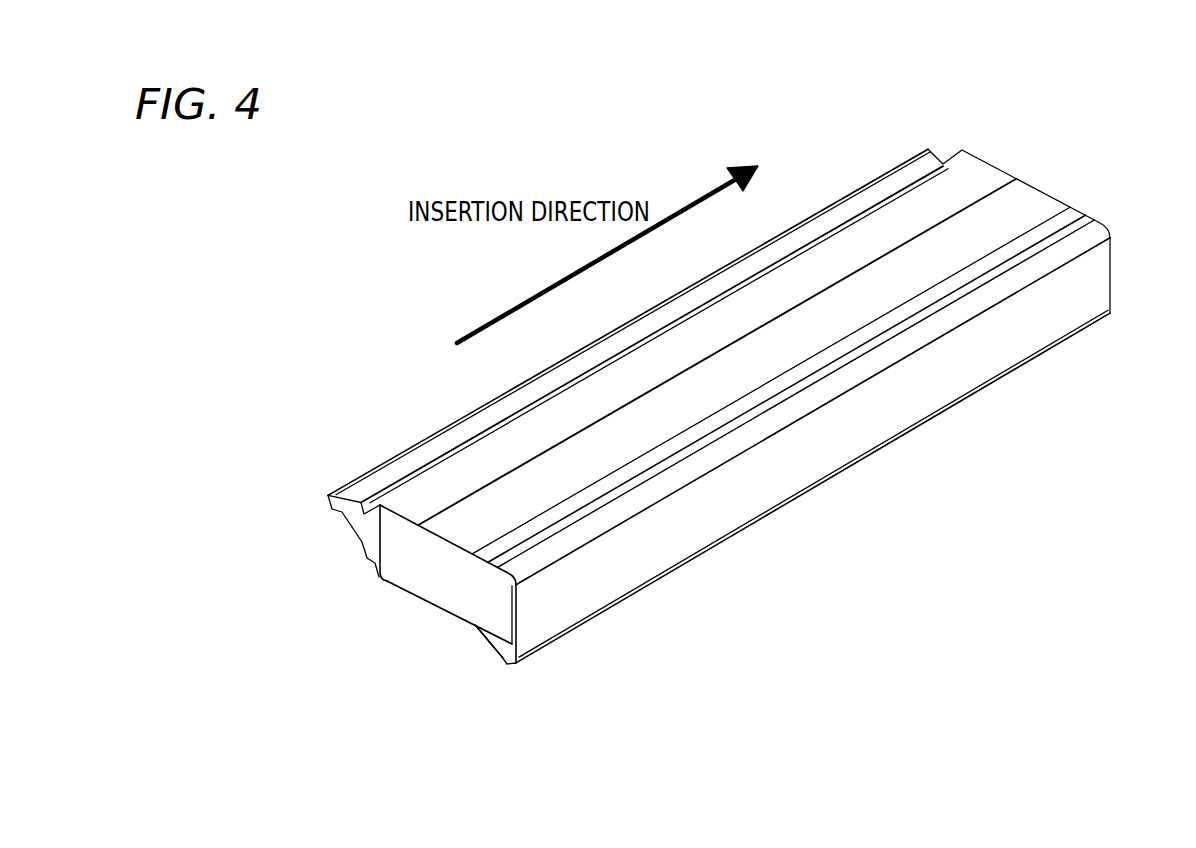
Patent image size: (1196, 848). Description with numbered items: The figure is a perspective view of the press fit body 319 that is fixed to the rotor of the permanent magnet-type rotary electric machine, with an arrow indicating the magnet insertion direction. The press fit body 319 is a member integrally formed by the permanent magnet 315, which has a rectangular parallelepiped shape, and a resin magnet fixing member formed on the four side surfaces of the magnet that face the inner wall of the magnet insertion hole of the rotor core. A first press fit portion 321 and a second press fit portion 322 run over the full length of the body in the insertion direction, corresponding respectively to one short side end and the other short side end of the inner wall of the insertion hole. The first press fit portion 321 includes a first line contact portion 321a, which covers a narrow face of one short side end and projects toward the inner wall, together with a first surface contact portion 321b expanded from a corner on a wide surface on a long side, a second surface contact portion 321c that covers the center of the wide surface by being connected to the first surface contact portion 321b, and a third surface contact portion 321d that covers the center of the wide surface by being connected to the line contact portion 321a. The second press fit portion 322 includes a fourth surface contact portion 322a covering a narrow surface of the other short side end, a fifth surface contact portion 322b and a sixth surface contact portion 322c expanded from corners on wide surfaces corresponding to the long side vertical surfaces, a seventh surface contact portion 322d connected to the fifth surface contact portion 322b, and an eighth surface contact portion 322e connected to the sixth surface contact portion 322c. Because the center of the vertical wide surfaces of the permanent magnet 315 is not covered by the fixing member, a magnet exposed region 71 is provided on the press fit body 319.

The press fit body 319 is at (1108, 174).
The first press fit portion 321 is at (417, 452).
The first line contact portion 321a is at (333, 505).
The first surface contact portion 321b is at (379, 579).
The second surface contact portion 321c is at (418, 592).
The third surface contact portion 321d is at (463, 477).
The permanent magnet 315 is at (440, 582).
The second press fit portion 322 is at (770, 480).
The fourth surface contact portion 322a is at (745, 503).
The fifth surface contact portion 322b is at (503, 660).
The sixth surface contact portion 322c is at (647, 495).
The seventh surface contact portion 322d is at (476, 627).
The eighth surface contact portion 322e is at (562, 508).
The magnet exposed region 71 is at (810, 324).